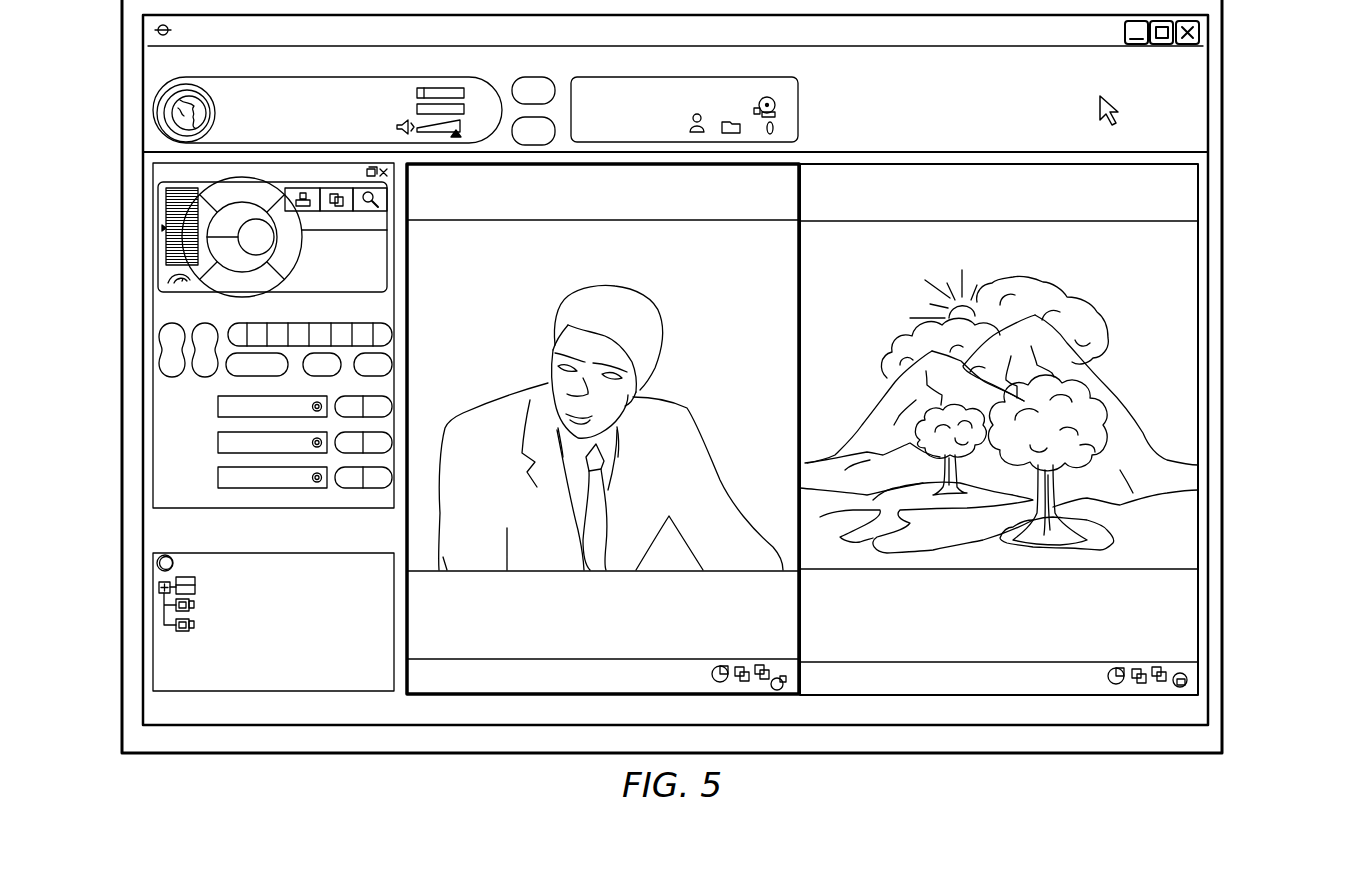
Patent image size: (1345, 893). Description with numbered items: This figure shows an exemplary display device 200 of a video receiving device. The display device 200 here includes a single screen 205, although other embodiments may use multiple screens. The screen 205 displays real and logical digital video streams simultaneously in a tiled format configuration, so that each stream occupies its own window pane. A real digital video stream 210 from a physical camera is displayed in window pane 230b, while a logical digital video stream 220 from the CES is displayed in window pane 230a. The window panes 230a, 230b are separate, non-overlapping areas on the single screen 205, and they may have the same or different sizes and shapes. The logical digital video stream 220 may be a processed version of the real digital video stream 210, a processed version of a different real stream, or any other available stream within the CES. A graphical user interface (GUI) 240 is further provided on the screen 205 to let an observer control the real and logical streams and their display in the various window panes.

The display device 200 is at (1253, 91).
The screen 205 is at (122, 208).
The real digital video stream 210 is at (1175, 318).
The logical digital video stream 220 is at (760, 317).
The window pane 230a is at (693, 628).
The window pane 230b is at (1088, 625).
The graphical user interface (GUI) 240 is at (160, 315).